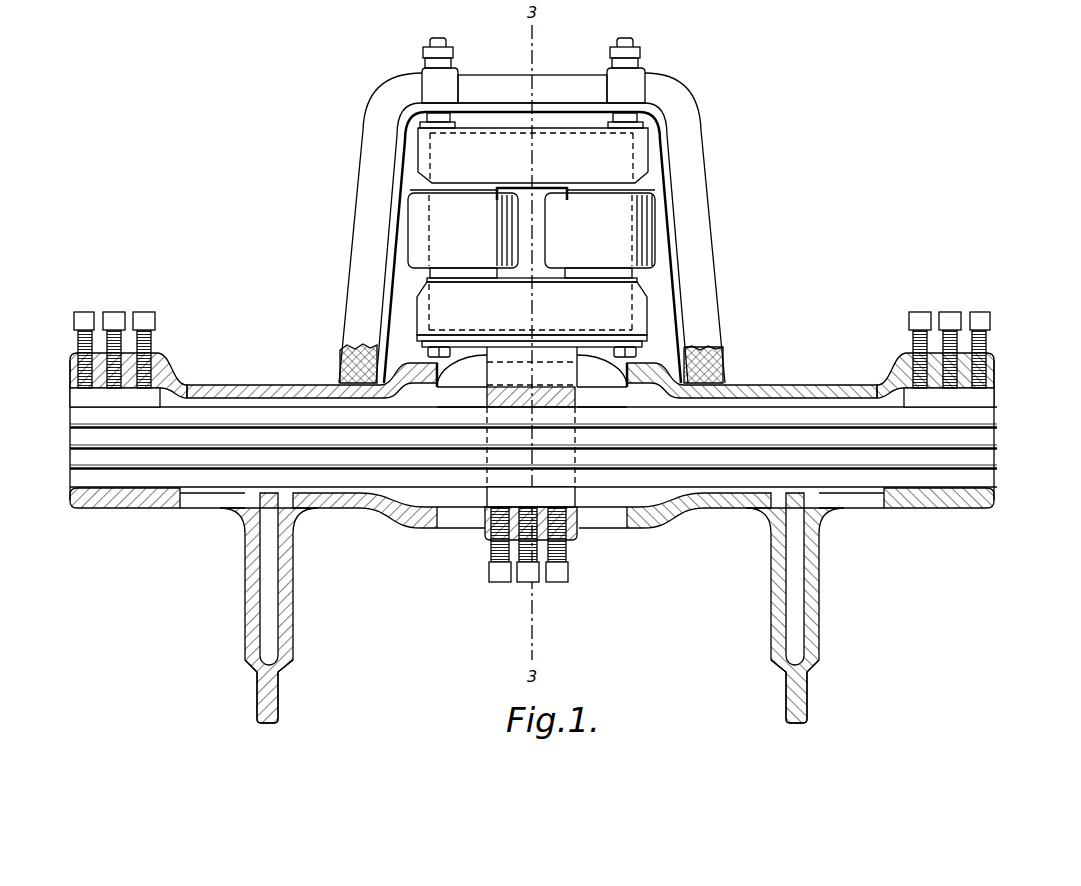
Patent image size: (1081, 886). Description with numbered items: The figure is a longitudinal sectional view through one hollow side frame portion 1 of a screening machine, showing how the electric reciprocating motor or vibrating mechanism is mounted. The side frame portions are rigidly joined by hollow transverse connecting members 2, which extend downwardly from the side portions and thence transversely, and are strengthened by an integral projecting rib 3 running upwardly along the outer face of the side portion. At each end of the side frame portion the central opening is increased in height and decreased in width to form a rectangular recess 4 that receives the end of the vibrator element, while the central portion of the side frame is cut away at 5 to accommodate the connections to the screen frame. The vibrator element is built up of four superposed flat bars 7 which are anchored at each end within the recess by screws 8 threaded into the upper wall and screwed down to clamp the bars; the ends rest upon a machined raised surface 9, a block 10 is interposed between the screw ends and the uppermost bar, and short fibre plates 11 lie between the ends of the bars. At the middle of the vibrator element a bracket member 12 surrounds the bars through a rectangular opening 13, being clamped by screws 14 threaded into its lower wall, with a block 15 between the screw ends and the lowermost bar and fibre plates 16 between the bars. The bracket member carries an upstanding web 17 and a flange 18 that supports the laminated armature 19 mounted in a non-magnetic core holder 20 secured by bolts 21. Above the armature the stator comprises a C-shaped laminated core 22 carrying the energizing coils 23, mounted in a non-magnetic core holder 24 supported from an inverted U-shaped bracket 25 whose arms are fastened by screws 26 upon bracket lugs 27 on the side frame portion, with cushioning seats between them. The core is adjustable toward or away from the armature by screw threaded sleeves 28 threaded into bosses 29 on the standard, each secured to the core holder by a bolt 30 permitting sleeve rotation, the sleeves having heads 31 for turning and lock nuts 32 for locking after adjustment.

The side frame portion 1 is at (240, 388).
The connecting member 2 is at (290, 563).
The rib 3 is at (267, 693).
The rectangular recess 4 is at (72, 385).
The cut away portion 5 is at (440, 377).
The bars 7 is at (630, 440).
The screws 8 is at (144, 311).
The raised surface 9 is at (123, 497).
The block 10 is at (80, 397).
The short plates 11 is at (95, 430).
The bracket member 12 is at (550, 395).
The rectangular opening 13 is at (487, 512).
The screws 14 is at (500, 583).
The block 15 is at (557, 495).
The short plates 16 is at (513, 468).
The upstanding web 17 is at (550, 373).
The flange 18 is at (430, 345).
The armature 19 is at (630, 280).
The core holder 20 is at (450, 301).
The bolts 21 is at (638, 352).
The laminated core 22 is at (613, 190).
The energizing coils 23 is at (440, 222).
The core holder 24 is at (640, 147).
The supporting bracket 25 is at (382, 117).
The screws 26 is at (723, 350).
The bracket lugs 27 is at (343, 378).
The screw threaded sleeve 28 is at (640, 58).
The boss 29 is at (428, 82).
The bolt 30 is at (624, 37).
The head 31 is at (442, 50).
The lock nut 32 is at (610, 66).